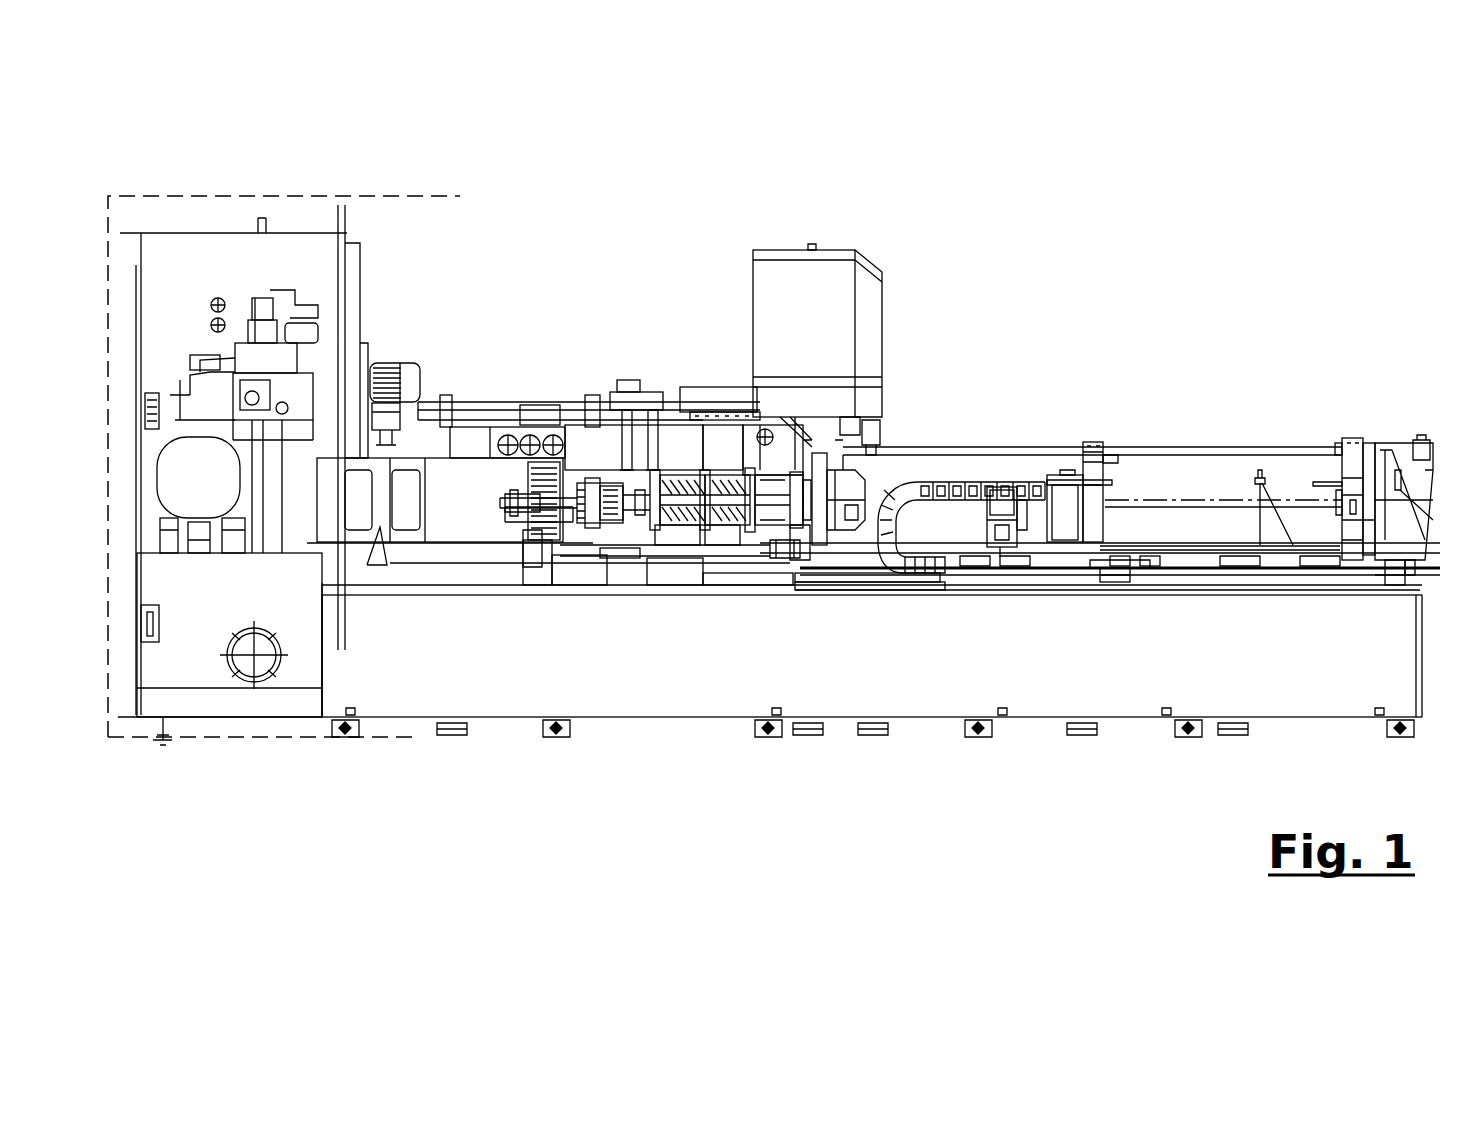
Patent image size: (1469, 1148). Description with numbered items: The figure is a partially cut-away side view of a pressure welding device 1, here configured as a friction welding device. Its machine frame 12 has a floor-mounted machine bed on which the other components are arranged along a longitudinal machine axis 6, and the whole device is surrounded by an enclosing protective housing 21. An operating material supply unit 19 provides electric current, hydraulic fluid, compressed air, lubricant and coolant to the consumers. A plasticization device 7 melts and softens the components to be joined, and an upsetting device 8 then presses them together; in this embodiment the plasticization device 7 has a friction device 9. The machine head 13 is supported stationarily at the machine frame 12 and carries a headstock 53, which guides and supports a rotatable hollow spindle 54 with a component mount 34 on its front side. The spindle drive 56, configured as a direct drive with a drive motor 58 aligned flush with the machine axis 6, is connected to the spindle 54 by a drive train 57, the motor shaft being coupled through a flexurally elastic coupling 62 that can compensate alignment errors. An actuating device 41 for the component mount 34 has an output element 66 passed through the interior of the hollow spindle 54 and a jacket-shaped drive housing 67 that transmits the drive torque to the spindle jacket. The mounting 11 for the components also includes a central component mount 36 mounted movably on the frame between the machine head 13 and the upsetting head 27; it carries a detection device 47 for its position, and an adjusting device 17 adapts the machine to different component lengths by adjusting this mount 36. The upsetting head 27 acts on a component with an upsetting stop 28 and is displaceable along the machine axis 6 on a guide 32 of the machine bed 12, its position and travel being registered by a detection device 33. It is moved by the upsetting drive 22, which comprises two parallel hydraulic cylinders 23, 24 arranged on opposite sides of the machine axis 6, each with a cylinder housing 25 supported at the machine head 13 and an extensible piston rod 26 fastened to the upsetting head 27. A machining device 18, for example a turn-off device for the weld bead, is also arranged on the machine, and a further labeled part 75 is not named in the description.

The pressure welding device 1 is at (1172, 260).
The protective housing 21 is at (445, 192).
The machining device 18 is at (798, 285).
The operating material supply unit 19 is at (215, 358).
The friction drive 56 is at (548, 440).
The drive motor 58 is at (466, 484).
The coupling 62 is at (604, 478).
The actuating device 41 is at (670, 448).
The machine head 13 is at (765, 429).
The headstock 53 is at (773, 448).
The plasticization device 7 is at (961, 473).
The friction device 9 is at (961, 473).
The mounting 11 is at (895, 458).
The component mount 36 is at (1093, 475).
The adjusting device 17 is at (1137, 525).
The machine axis 6 is at (1187, 500).
The drive unit 24 is at (1243, 455).
The piston rod 26 is at (1163, 552).
The upsetting device 8 is at (1391, 492).
The upsetting drive 22 is at (1338, 415).
The upsetting stop 28 is at (1364, 478).
The upsetting head 27 is at (1410, 444).
The drive train 57 is at (580, 543).
The bearing bracket 75 is at (672, 536).
The drive housing 67 is at (683, 537).
The output element 66 is at (723, 530).
The spindle 54 is at (763, 520).
The component mount 34 is at (852, 525).
The guide 32 is at (867, 582).
The detection device 47 is at (1115, 577).
The detection device 33 is at (1395, 577).
The drive unit 23 is at (926, 599).
The cylinder housing 25 is at (605, 558).
The machine frame 12 is at (925, 667).